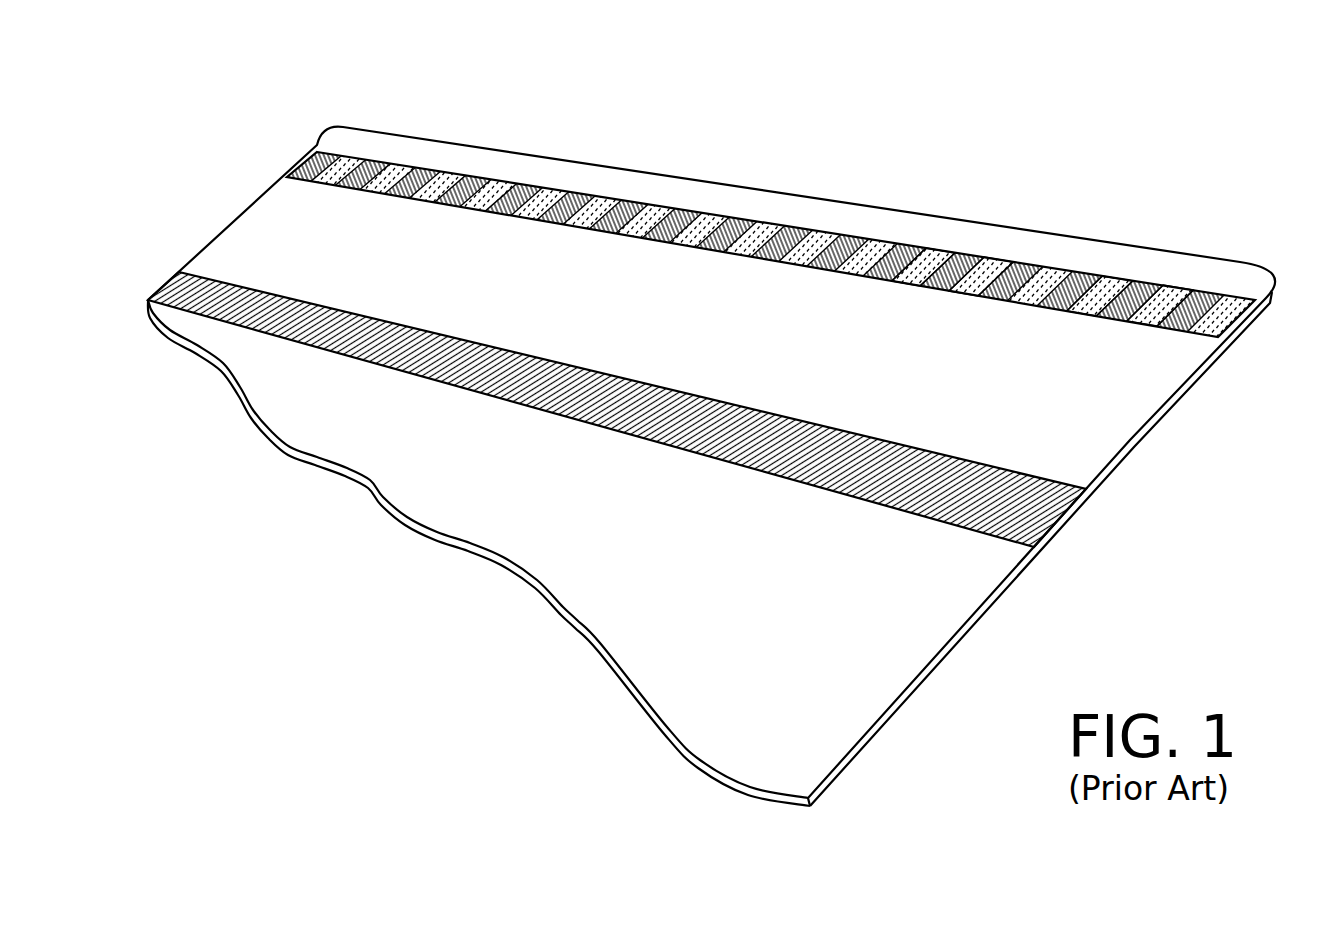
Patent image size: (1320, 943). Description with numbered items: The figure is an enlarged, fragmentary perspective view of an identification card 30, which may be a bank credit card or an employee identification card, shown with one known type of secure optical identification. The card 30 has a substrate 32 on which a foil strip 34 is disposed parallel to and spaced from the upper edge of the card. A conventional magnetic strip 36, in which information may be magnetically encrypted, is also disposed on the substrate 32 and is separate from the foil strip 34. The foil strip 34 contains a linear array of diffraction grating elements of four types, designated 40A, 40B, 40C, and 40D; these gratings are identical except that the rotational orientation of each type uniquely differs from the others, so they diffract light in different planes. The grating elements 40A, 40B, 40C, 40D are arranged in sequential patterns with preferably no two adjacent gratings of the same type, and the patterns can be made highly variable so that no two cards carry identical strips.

The identification card 30 is at (733, 448).
The substrate 32 is at (828, 733).
The foil strip 34 is at (320, 168).
The magnetic strip 36 is at (1043, 515).
The diffraction grating element 40A is at (1188, 296).
The diffraction grating element 40B is at (1104, 290).
The diffraction grating element 40C is at (1008, 266).
The diffraction grating element 40D is at (920, 258).